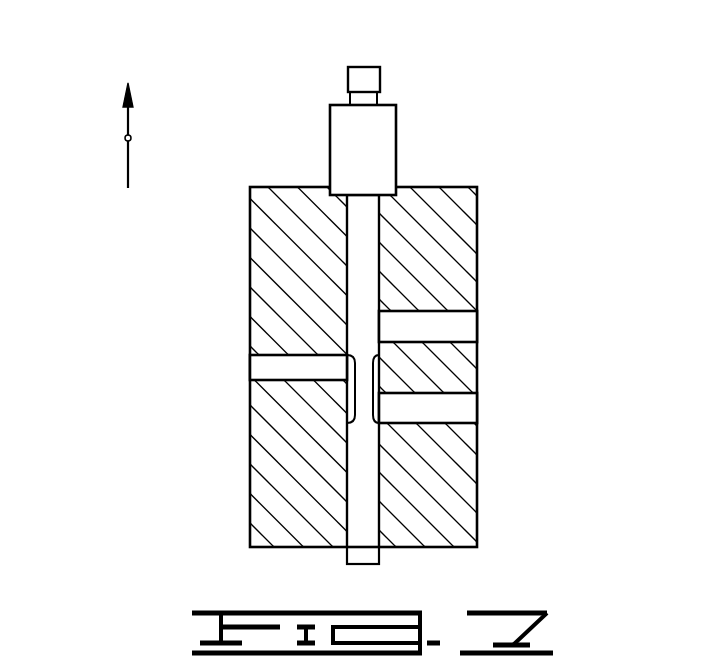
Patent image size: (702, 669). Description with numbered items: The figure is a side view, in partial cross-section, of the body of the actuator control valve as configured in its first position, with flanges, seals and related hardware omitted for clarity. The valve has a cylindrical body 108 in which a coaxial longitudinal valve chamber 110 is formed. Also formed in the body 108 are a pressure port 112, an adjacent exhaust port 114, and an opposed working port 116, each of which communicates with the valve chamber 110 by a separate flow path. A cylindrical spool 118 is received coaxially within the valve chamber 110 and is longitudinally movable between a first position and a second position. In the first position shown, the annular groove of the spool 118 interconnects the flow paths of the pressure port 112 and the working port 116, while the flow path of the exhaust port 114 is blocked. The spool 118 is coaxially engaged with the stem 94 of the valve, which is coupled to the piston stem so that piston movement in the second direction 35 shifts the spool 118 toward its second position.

The second direction 35 is at (125, 137).
The stem 94 is at (372, 78).
The cylindrical body 108 is at (477, 217).
The valve chamber 110 is at (382, 501).
The pressure port 112 is at (477, 405).
The exhaust port 114 is at (477, 323).
The working port 116 is at (250, 368).
The cylindrical spool 118 is at (359, 289).